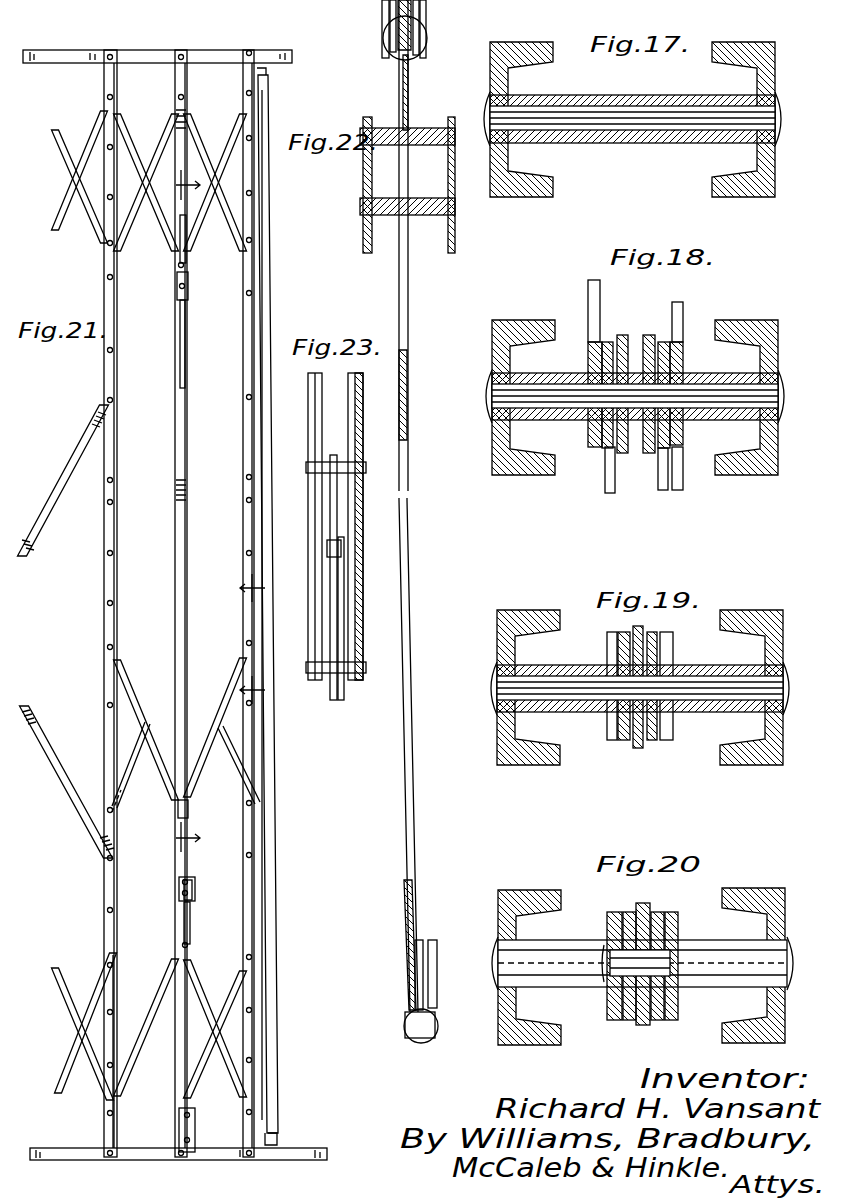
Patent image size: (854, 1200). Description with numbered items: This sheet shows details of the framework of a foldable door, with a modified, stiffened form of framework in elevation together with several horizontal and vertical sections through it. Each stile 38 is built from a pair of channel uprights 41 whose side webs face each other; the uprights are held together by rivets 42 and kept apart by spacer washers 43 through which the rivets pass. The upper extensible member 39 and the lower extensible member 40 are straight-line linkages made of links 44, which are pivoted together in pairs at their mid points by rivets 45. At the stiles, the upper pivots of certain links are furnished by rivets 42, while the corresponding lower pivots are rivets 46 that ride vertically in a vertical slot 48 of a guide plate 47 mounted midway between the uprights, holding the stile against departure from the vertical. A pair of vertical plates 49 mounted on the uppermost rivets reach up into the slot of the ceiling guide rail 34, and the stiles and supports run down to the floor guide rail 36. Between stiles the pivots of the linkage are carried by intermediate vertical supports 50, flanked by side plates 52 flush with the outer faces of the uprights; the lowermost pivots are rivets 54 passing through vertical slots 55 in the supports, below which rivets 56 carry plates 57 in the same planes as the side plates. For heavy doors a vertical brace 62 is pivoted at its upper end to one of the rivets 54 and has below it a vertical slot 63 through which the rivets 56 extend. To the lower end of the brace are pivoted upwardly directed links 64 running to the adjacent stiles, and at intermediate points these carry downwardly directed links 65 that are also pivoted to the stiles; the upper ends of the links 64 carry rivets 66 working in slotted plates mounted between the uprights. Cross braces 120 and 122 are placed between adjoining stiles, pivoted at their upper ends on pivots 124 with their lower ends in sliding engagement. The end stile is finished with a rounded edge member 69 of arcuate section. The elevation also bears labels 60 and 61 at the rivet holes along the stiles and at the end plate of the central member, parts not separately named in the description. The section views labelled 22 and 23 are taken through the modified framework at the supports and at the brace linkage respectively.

In FIG. 21, the guide rail 34 is at (292, 50).
In FIG. 21, the guide rail 36 is at (290, 1148).
In FIG. 21, the stile 38 is at (102, 384).
In FIG. 21, the upper extensible member 39 is at (82, 226).
In FIG. 22, the upper extensible member 39 is at (384, 18).
In FIG. 18, the upper extensible member 39 is at (585, 305).
In FIG. 20, the upper extensible member 39 is at (605, 915).
In FIG. 21, the lower extensible member 40 is at (96, 975).
In FIG. 19, the lower extensible member 40 is at (605, 647).
In FIG. 23, the upright 41 is at (309, 421).
In FIG. 17, the upright 41 is at (520, 195).
In FIG. 18, the upright 41 is at (518, 472).
In FIG. 19, the upright 41 is at (528, 762).
In FIG. 20, the upright 41 is at (500, 1038).
In FIG. 17, the rivet 42 is at (638, 133).
In FIG. 18, the rivet 42 is at (695, 393).
In FIG. 19, the rivet 42 is at (748, 683).
In FIG. 20, the rivet 42 is at (735, 955).
In FIG. 17, the spacer washer 43 is at (605, 97).
In FIG. 21, the link 44 is at (162, 240).
In FIG. 22, the link 44 is at (428, 13).
In FIG. 18, the link 44 is at (608, 477).
In FIG. 19, the link 44 is at (672, 660).
In FIG. 20, the link 44 is at (680, 1005).
In FIG. 21, the rivet 45 is at (75, 182).
In FIG. 20, the rivet 46 is at (612, 985).
In FIG. 20, the guide plate 47 is at (640, 1025).
In FIG. 20, the vertical slot 48 is at (628, 942).
In FIG. 18, the vertical plate 49 is at (650, 338).
In FIG. 21, the intermediate vertical support 50 is at (183, 140).
In FIG. 22, the intermediate vertical support 50 is at (412, 118).
In FIG. 22, the side plate 52 is at (365, 227).
In FIG. 22, the rivet 54 is at (398, 47).
In FIG. 21, the vertical slot 55 is at (186, 235).
In FIG. 22, the vertical slot 55 is at (412, 88).
In FIG. 21, the rivet 56 is at (188, 290).
In FIG. 22, the rivet 56 is at (383, 134).
In FIG. 21, the plate 57 is at (195, 890).
In FIG. 21, the rivet 60 is at (113, 350).
In FIG. 21, the end plate 61 is at (190, 877).
In FIG. 22, the end plate 61 is at (367, 248).
In FIG. 21, the vertical brace 62 is at (182, 512).
In FIG. 22, the vertical brace 62 is at (408, 428).
In FIG. 21, the vertical slot 63 is at (180, 380).
In FIG. 21, the link 64 is at (135, 690).
In FIG. 23, the link 64 is at (330, 690).
In FIG. 21, the link 65 is at (130, 790).
In FIG. 23, the link 65 is at (344, 690).
In FIG. 23, the rivet 66 is at (307, 468).
In FIG. 21, the edge member 69 is at (275, 760).
In FIG. 21, the cross brace 120 is at (33, 724).
In FIG. 21, the cross brace 122 is at (68, 472).
In FIG. 21, the pivot 124 is at (112, 402).
In FIG. 21, the section line 22- 22 is at (175, 511).
In FIG. 21, the section line 23- 23 is at (268, 639).